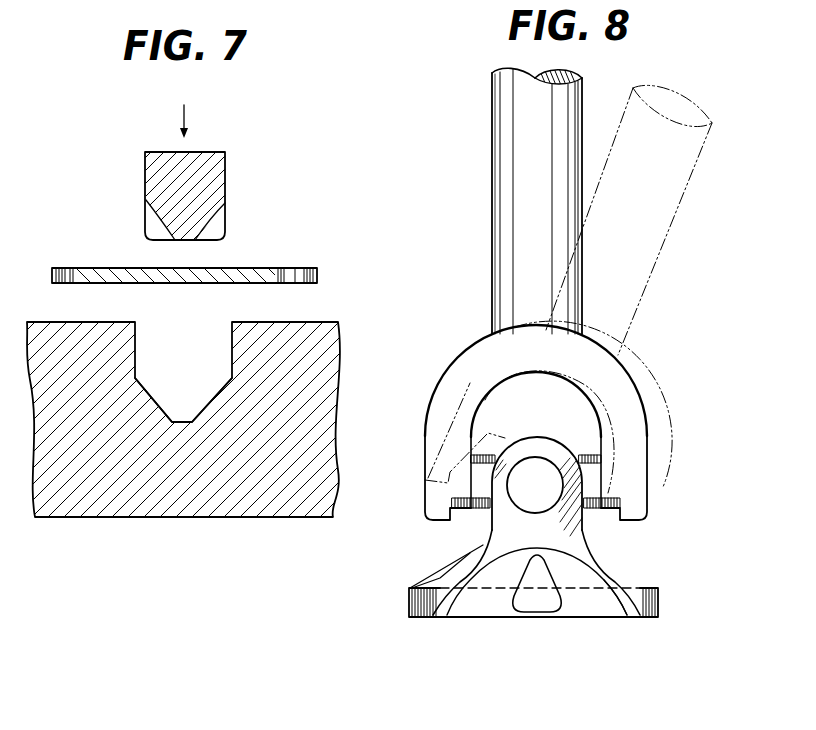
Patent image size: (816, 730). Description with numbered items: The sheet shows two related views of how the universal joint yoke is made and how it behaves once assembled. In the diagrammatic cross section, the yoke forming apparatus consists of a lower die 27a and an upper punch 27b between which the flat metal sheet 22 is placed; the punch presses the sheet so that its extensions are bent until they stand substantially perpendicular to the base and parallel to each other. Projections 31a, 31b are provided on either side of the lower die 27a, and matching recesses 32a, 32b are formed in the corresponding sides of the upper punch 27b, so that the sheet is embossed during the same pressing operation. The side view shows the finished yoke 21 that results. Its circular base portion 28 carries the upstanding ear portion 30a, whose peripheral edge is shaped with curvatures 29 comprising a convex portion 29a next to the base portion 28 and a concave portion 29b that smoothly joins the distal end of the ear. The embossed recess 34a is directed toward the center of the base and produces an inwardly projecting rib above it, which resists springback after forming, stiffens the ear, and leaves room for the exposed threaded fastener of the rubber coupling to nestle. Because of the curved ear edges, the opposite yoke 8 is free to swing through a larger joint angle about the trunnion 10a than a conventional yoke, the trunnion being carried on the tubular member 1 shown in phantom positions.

In FIG. 8, the tubular member 1 is at (492, 222).
In FIG. 8, the opposite yoke 8 is at (465, 350).
In FIG. 8, the trunnion 10a is at (588, 465).
In FIG. 8, the universal joint yoke 21 is at (488, 626).
In FIG. 7, the metal sheet 22 is at (262, 258).
In FIG. 7, the lower die 27a is at (322, 405).
In FIG. 7, the upper punch 27b is at (226, 180).
In FIG. 8, the circular base portion 28 is at (620, 587).
In FIG. 8, the curvatures 29 is at (445, 556).
In FIG. 8, the convex portion 29a is at (432, 578).
In FIG. 8, the concave portion 29b is at (487, 548).
In FIG. 8, the ear portion 30a is at (537, 436).
In FIG. 7, the projection 31a is at (153, 391).
In FIG. 7, the projection 31b is at (210, 398).
In FIG. 7, the recess 32a is at (147, 223).
In FIG. 7, the recess 32b is at (217, 223).
In FIG. 8, the recess 34a is at (538, 602).